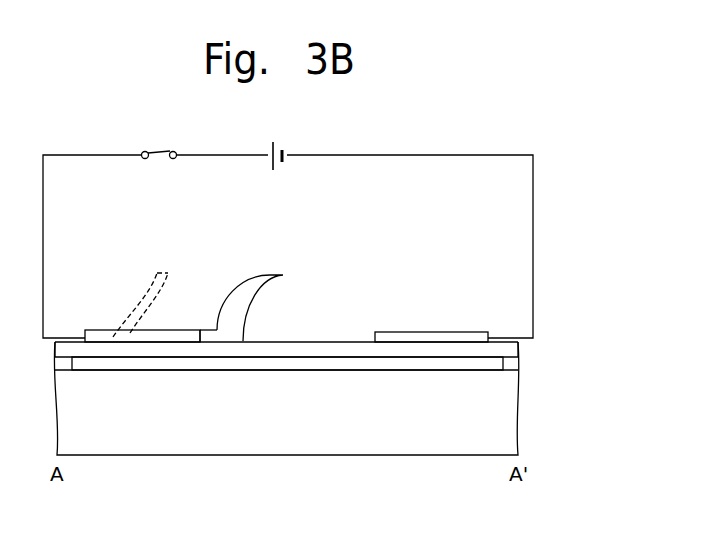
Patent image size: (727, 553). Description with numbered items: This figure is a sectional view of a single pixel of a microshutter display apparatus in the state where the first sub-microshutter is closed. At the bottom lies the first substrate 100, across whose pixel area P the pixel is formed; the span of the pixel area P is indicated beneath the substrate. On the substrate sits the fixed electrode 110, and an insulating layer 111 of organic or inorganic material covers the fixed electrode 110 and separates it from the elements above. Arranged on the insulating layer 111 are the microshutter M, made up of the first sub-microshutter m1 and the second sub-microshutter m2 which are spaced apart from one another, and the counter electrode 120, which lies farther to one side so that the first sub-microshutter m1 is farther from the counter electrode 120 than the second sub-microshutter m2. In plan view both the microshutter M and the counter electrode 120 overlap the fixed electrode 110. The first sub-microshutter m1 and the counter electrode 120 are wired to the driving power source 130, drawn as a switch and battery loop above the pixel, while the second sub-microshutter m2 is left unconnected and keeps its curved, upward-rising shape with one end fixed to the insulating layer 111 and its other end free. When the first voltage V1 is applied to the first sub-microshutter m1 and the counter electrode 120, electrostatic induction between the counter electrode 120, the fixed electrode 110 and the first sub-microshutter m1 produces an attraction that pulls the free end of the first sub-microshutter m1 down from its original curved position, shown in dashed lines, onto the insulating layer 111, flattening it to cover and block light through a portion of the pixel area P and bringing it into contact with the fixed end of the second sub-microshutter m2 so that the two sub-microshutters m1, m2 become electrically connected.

The driving power source 130 is at (533, 216).
The counter electrode 120 is at (448, 330).
The insulating layer 111 is at (512, 349).
The fixed electrode 110 is at (497, 364).
The first substrate 100 is at (512, 425).
The first sub-microshutter m1 is at (101, 338).
The second sub-microshutter m2 is at (278, 273).
The microshutter M is at (293, 227).
The first voltage V1 is at (172, 297).
The pixel area P is at (518, 504).